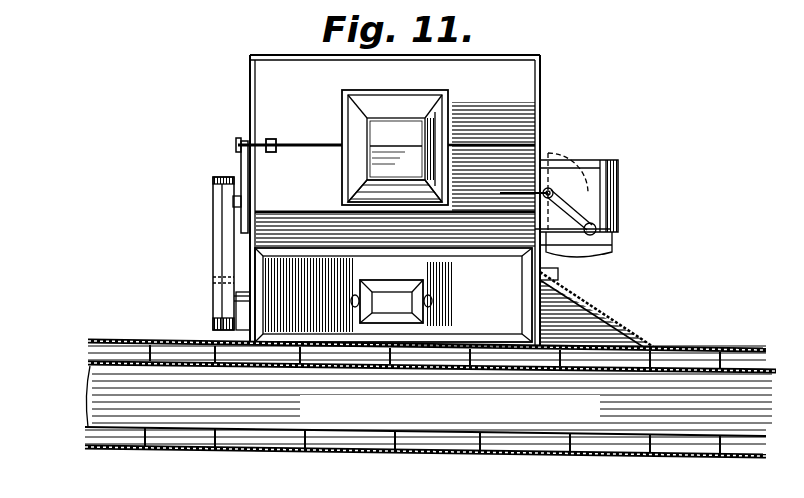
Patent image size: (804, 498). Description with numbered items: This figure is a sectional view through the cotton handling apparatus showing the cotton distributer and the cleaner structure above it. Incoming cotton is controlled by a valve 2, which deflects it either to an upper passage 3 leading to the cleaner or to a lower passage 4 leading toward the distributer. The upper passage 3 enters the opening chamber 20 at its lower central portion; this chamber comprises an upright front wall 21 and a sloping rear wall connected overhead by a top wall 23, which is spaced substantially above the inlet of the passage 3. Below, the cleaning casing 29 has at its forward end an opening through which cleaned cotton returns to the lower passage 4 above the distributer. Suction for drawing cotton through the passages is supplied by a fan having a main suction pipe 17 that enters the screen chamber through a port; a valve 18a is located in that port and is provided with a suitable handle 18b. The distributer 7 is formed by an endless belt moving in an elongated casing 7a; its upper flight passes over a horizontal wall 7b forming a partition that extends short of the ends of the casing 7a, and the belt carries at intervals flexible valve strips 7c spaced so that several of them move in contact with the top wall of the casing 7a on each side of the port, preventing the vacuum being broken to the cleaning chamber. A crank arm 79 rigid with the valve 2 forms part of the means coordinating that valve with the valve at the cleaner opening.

The valve 2 is at (380, 156).
The upper passage 3 is at (400, 106).
The lower passage 4 is at (342, 187).
The endless cotton distributer belt 7 is at (412, 384).
The elongated casing 7a is at (170, 343).
The horizontal wall 7b is at (108, 362).
The flexible valve strips 7c is at (712, 350).
The main suction pipe 17 is at (618, 165).
The valve 18a is at (575, 185).
The handle 18b is at (598, 237).
The opening chamber 20 is at (541, 67).
The upright front wall 21 is at (524, 92).
The top wall 23 is at (508, 60).
The cleaning casing 29 is at (248, 246).
The crank arm 79 is at (240, 163).